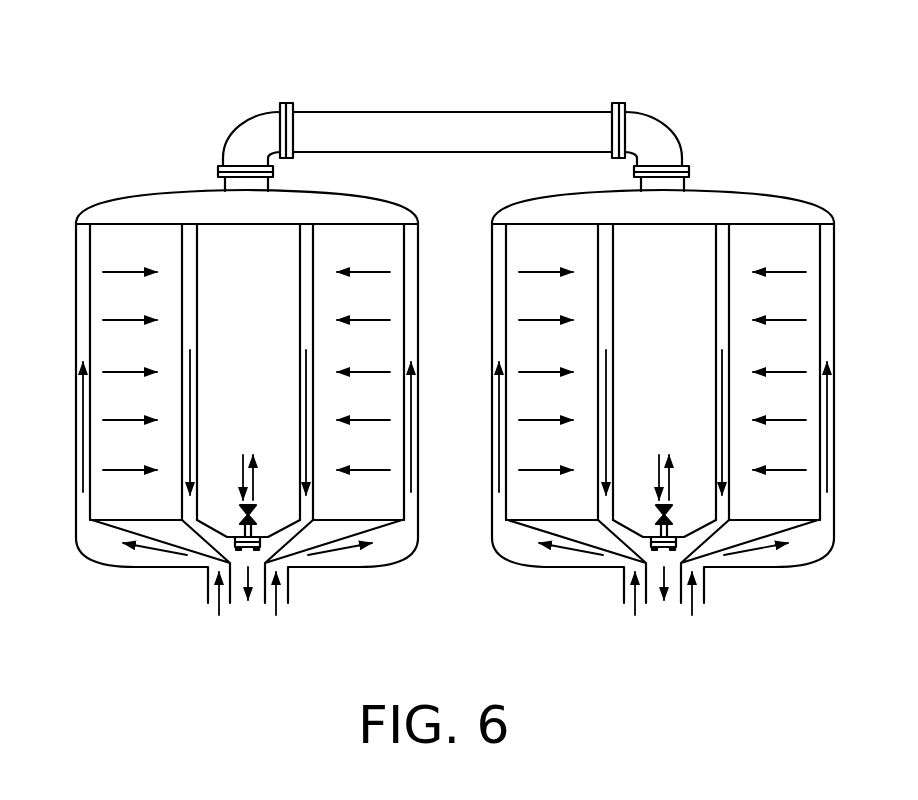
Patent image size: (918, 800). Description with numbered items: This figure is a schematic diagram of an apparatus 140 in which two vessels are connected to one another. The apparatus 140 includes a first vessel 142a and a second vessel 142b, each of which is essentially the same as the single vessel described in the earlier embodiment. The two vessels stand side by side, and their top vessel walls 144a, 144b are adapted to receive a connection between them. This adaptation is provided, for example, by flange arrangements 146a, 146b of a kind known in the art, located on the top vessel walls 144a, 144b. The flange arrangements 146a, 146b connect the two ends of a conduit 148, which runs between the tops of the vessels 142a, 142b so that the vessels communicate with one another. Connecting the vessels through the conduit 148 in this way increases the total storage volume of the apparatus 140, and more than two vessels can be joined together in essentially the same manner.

The apparatus 140 is at (745, 65).
The vessel 142a is at (75, 287).
The vessel 142b is at (801, 412).
The top vessel wall 144a is at (126, 197).
The top vessel wall 144b is at (796, 197).
The flange arrangement 146a is at (218, 167).
The flange arrangement 146b is at (705, 153).
The conduit 148 is at (468, 110).